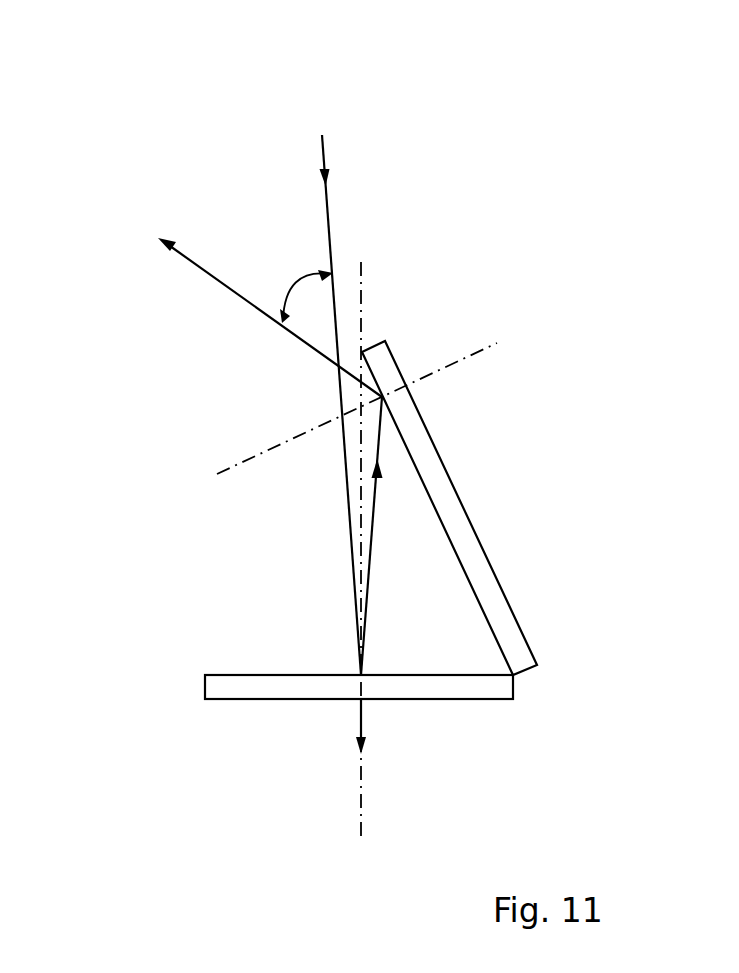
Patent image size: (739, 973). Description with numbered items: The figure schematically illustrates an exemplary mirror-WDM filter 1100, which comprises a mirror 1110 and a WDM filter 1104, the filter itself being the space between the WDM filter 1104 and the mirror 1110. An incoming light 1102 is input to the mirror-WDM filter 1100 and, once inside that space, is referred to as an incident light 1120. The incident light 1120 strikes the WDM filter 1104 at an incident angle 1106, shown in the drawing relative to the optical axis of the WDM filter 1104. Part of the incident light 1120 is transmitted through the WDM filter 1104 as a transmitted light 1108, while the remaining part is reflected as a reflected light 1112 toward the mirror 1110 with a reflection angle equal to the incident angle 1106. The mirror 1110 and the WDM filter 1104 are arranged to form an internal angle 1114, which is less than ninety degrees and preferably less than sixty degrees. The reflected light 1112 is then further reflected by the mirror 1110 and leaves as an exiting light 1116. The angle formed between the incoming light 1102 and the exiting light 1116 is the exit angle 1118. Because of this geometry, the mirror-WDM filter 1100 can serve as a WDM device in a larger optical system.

The mirror-WDM filter 1100 is at (163, 53).
The incoming light 1102 is at (328, 228).
The WDM filter 1104 is at (230, 675).
The incident angle α 1106 is at (350, 300).
The transmitted light 1108 is at (362, 712).
The mirror 1110 is at (455, 483).
The reflected light 1112 is at (372, 563).
The internal angle β 1114 is at (475, 630).
The exiting light 1116 is at (248, 302).
The angle ε 1118 is at (307, 278).
The incident light 1120 is at (352, 562).